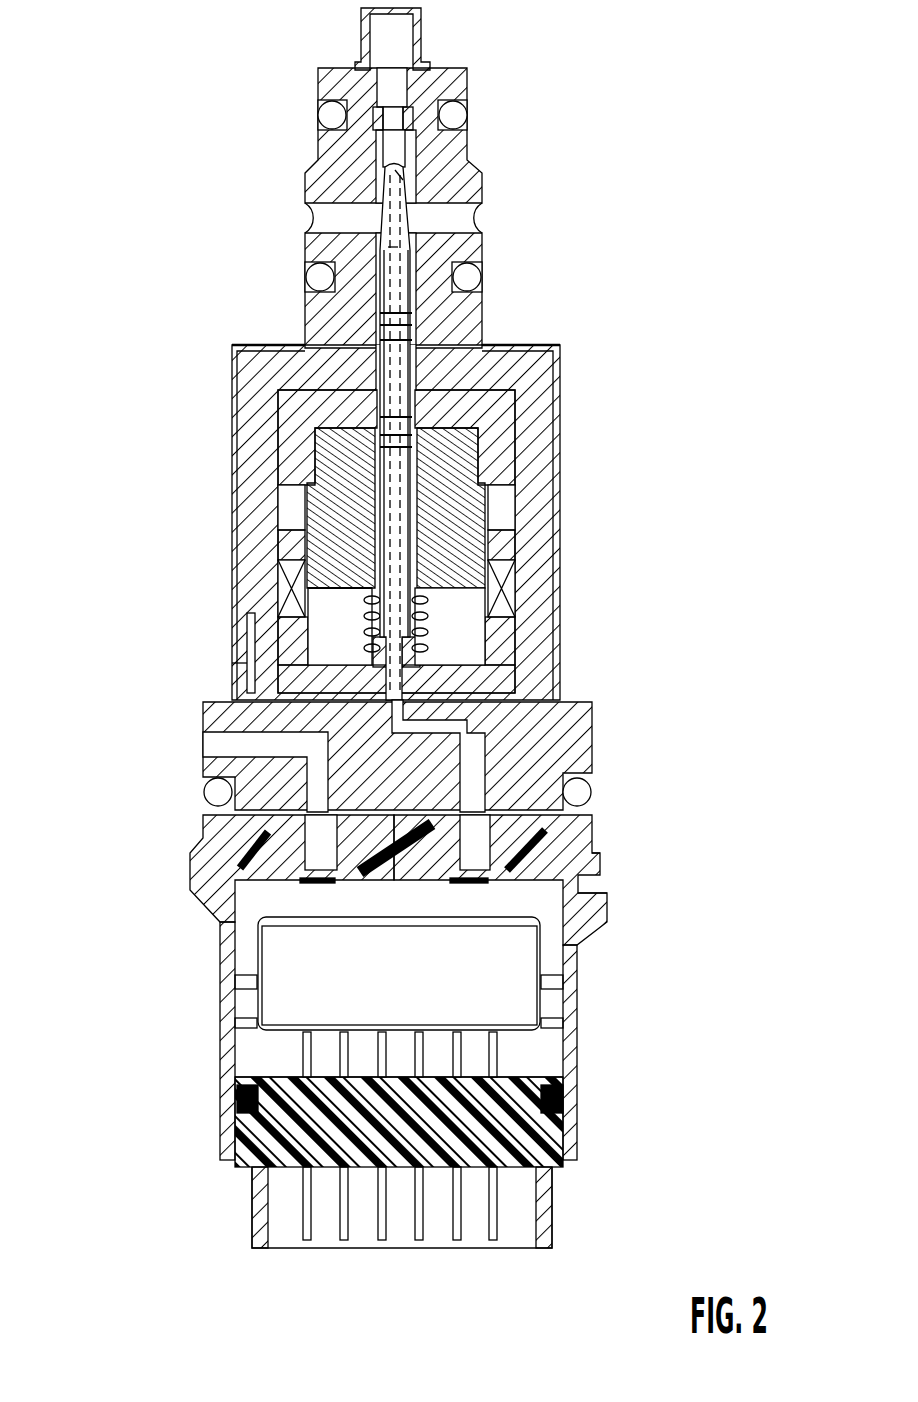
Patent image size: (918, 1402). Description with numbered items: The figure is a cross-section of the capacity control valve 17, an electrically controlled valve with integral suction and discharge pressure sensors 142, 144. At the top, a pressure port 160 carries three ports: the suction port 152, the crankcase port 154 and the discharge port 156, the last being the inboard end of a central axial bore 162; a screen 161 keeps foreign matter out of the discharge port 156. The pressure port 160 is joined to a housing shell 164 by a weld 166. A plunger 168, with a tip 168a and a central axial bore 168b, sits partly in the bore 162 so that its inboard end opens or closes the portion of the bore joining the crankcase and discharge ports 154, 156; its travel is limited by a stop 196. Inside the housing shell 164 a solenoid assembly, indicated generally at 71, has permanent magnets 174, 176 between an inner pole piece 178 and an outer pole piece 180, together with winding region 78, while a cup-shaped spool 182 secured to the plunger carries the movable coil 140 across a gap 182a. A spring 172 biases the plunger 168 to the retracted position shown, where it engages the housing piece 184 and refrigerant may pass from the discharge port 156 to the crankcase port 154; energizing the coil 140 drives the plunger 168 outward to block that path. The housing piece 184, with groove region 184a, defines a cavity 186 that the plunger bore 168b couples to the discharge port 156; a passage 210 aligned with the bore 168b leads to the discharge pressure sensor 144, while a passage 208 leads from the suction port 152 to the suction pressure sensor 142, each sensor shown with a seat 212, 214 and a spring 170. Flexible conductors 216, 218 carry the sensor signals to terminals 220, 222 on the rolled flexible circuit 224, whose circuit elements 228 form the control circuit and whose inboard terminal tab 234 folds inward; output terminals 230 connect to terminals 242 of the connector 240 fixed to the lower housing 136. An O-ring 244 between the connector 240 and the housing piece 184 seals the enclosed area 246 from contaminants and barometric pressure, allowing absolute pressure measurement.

The capacity control valve 17 is at (227, 57).
The valve housing assembly 71 is at (138, 421).
The coil winding 78 is at (282, 565).
The lower housing 136 is at (233, 1040).
The movable coil 140 is at (553, 595).
The suction pressure sensor 142 is at (250, 840).
The discharge pressure sensor 144 is at (575, 840).
The suction port 152 is at (225, 744).
The crankcase port 154 is at (337, 220).
The discharge port 156 is at (393, 83).
The pressure port 160 is at (318, 133).
The screen 161 is at (423, 47).
The central axial bore 162 is at (395, 150).
The housing shell 164 is at (560, 405).
The weld 166 is at (490, 345).
The plunger 168 is at (409, 300).
The rod tip 168a is at (404, 177).
The central axial bore 168b is at (397, 247).
The spring 170 is at (370, 425).
The spring 172 is at (430, 640).
The permanent magnet 174 is at (282, 400).
The permanent magnet 176 is at (476, 440).
The inner pole piece 178 is at (492, 520).
The outer pole piece 180 is at (288, 515).
The cup-shaped spool 182 is at (310, 680).
The armature gap 182a is at (305, 648).
The housing piece 184 is at (597, 870).
The snap ring groove 184a is at (250, 697).
The cavity 186 is at (257, 690).
The stop 196 is at (382, 115).
The passage 208 is at (232, 764).
The passage 210 is at (578, 742).
The left poppet 212 is at (290, 815).
The right poppet 214 is at (560, 812).
The flexible conductor 216 is at (300, 881).
The flexible conductor 218 is at (460, 880).
The terminal 220 is at (300, 881).
The terminal 222 is at (450, 881).
The flexible circuit 224 is at (537, 978).
The circuit elements 228 is at (237, 985).
The output terminals 230 is at (275, 1055).
The inboard terminal tab 234 is at (520, 917).
The connector 240 is at (565, 1160).
The terminals 242 is at (424, 1044).
The O-ring 244 is at (563, 1098).
The enclosed area 246 is at (240, 1098).